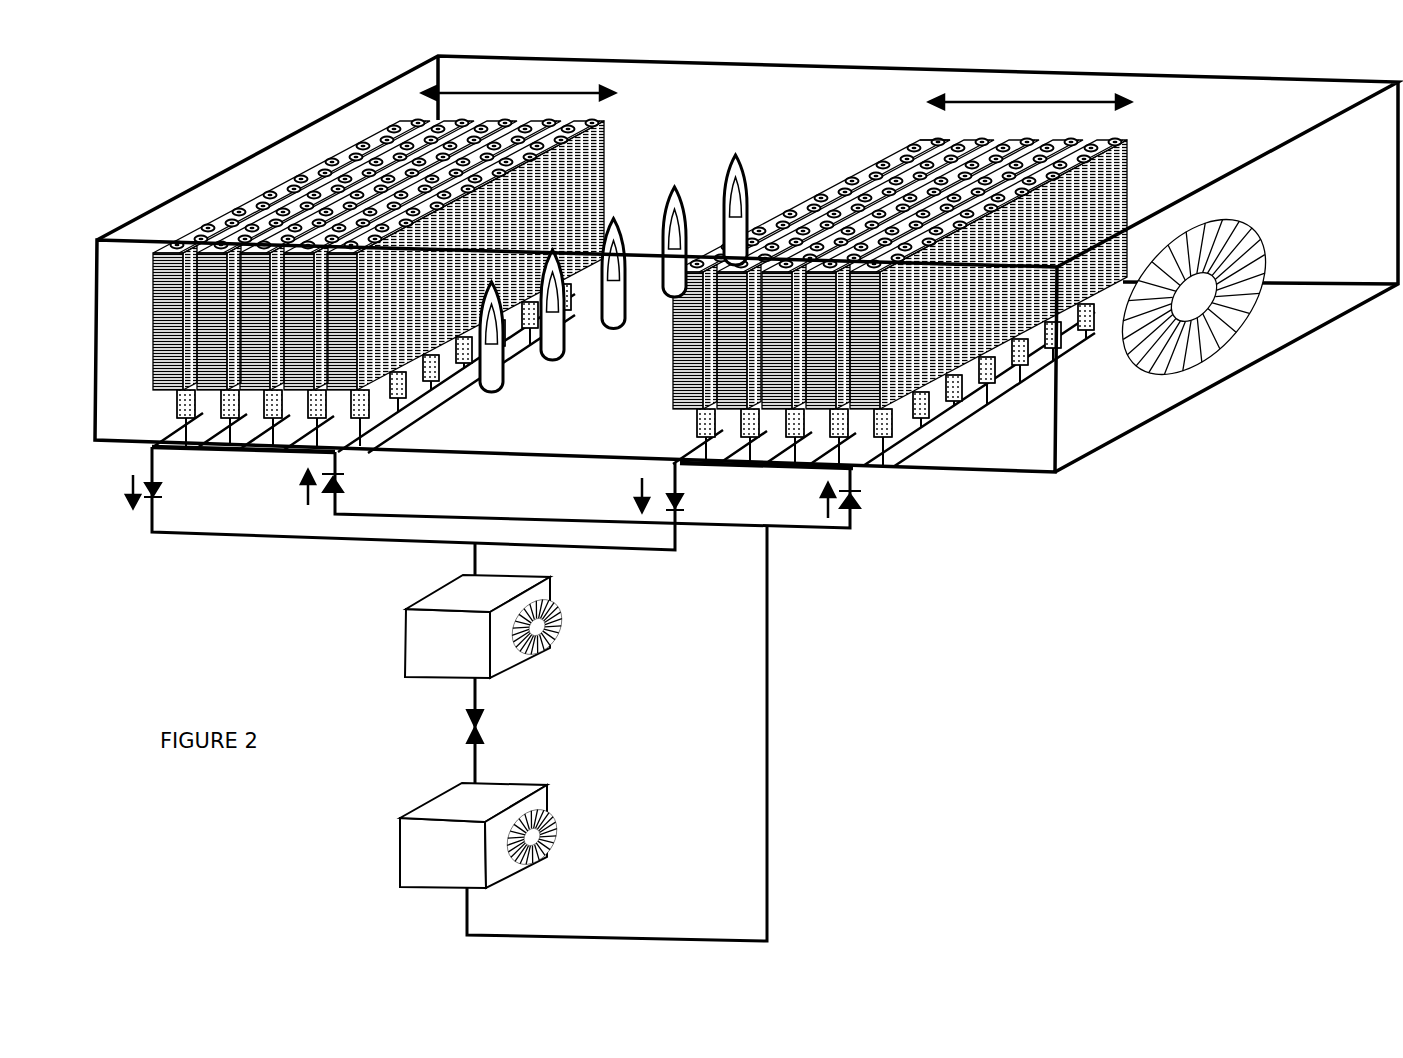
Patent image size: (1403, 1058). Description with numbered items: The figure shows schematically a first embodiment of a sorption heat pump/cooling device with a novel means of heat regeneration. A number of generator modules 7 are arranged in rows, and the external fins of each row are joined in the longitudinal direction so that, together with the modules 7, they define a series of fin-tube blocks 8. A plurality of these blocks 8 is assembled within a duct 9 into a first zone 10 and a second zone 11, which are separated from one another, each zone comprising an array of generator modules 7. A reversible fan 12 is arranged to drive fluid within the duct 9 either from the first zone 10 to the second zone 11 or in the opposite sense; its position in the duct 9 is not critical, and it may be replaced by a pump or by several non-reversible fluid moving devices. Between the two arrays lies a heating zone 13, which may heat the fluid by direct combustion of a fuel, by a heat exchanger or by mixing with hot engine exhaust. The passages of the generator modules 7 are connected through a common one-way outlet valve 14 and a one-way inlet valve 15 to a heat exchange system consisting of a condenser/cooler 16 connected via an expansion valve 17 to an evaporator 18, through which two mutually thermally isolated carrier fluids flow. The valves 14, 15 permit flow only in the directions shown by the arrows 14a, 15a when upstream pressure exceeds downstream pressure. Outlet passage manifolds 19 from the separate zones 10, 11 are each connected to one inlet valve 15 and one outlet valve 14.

The generator module 7 is at (884, 168).
The fin-tube block 8 is at (640, 284).
The duct 9 is at (746, 262).
The first zone 10 is at (1030, 94).
The second zone 11 is at (518, 84).
The reversible fan 12 is at (1201, 297).
The heating zone 13 is at (613, 273).
The one-way outlet valve 14 is at (434, 489).
The arrow 14a is at (387, 493).
The one-way inlet valve 15 is at (615, 488).
The arrow 15a is at (549, 494).
The condenser/cooler 16 is at (458, 626).
The expansion valve 17 is at (457, 726).
The evaporator 18 is at (461, 835).
The outlet passage manifold 19 is at (502, 694).